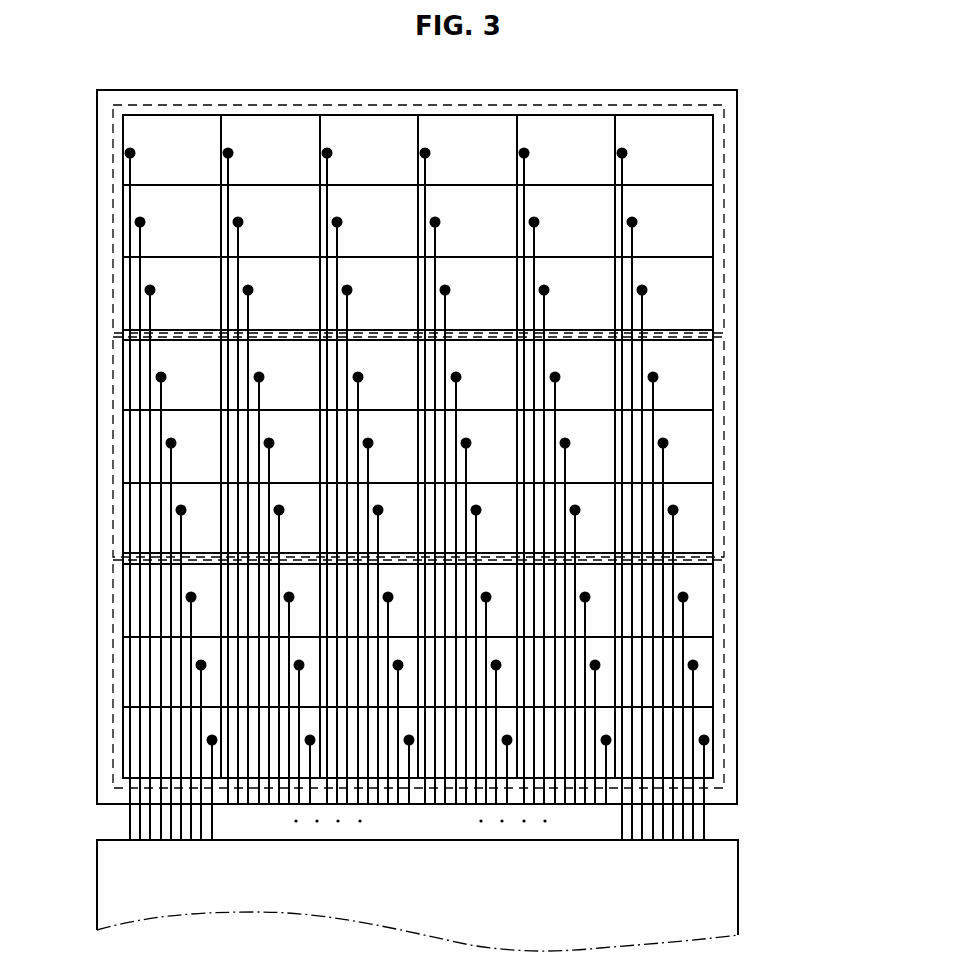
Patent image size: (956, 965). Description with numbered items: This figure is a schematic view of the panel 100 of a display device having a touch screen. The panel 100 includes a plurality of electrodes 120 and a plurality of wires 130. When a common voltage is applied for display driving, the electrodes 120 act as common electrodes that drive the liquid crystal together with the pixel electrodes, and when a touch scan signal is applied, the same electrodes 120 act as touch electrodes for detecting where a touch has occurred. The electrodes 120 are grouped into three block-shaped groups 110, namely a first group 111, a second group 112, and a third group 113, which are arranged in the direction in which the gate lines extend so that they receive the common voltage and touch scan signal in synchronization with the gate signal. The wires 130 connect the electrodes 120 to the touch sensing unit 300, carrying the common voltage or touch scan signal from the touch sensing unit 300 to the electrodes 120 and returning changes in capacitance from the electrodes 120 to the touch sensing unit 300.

The panel 100 is at (737, 150).
The groups 110 is at (506, 446).
The first group 111 is at (724, 282).
The second group 112 is at (724, 445).
The third group 113 is at (469, 674).
The electrodes 120 is at (150, 127).
The wires 130 is at (123, 198).
The touch sensing unit 300 is at (740, 885).